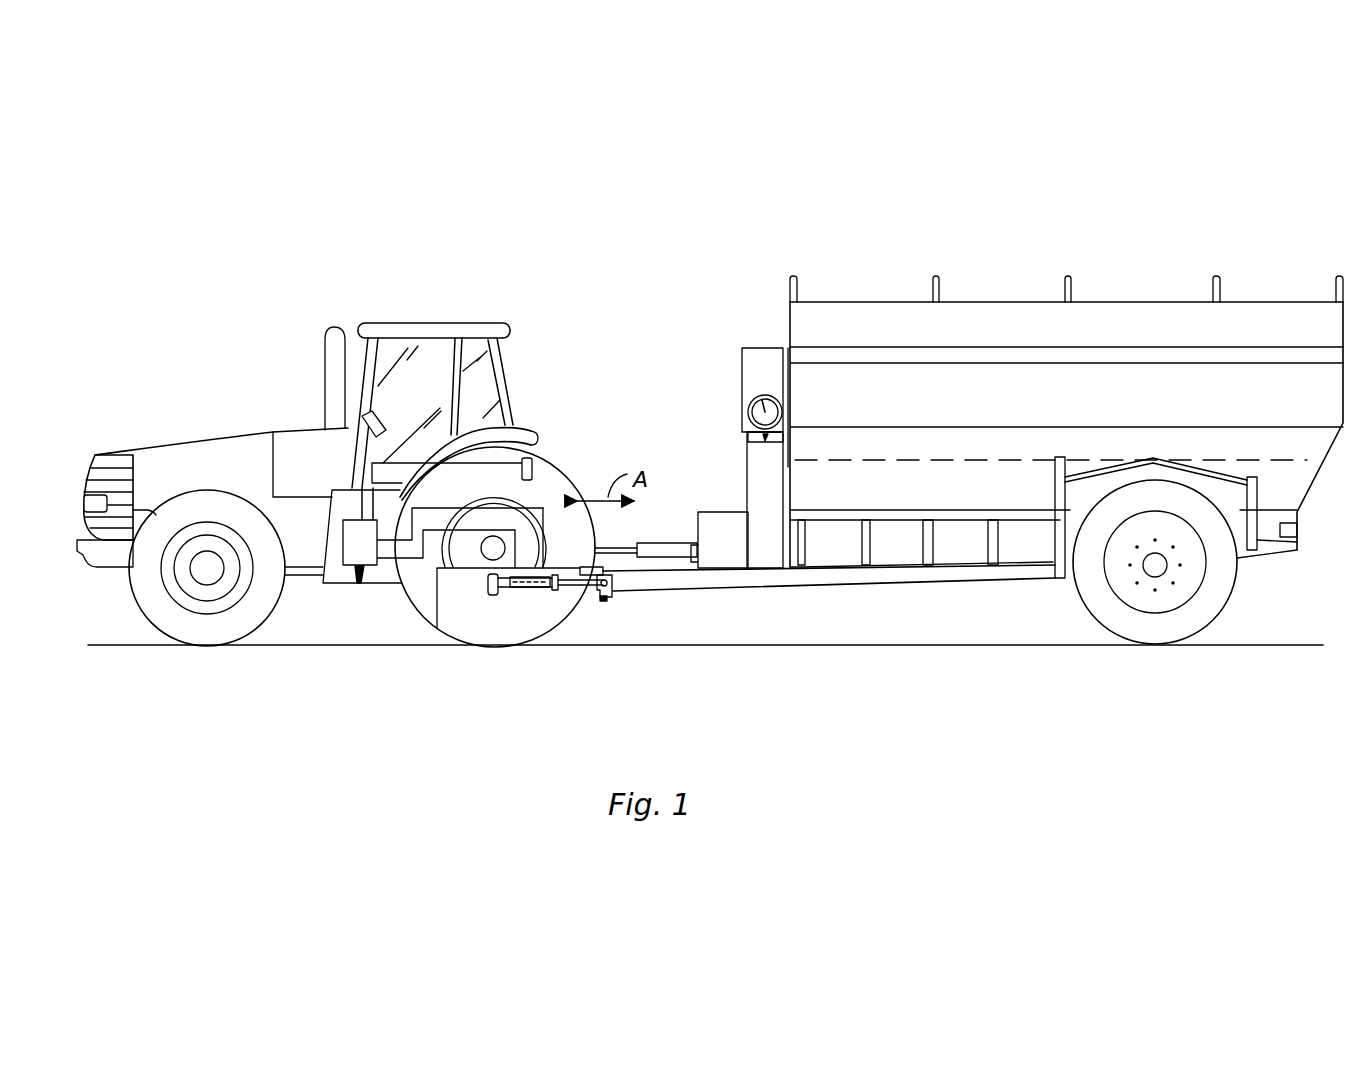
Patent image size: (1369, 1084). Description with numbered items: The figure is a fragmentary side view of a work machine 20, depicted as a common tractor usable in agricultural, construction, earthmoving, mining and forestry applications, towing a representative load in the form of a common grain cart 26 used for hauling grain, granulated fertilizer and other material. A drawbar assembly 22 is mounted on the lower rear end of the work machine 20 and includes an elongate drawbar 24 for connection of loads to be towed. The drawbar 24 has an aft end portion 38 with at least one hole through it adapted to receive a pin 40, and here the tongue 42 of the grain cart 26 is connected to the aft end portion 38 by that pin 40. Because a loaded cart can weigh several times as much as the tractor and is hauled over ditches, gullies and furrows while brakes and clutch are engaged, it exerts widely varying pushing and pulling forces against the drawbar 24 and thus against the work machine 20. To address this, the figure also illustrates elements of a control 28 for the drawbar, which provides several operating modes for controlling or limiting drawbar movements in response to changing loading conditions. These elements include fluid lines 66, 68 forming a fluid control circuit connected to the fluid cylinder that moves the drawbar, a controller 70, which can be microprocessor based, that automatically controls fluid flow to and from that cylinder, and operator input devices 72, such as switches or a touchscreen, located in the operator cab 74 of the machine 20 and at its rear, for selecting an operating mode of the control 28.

The work machine 20 is at (431, 288).
The drawbar assembly 22 is at (522, 600).
The drawbar 24 is at (577, 603).
The grain cart 26 is at (997, 298).
The control 28 is at (360, 583).
The aft end portion 38 is at (587, 595).
The pin 40 is at (603, 596).
The tongue 42 is at (643, 593).
The fluid line 66 is at (396, 558).
The fluid line 68 is at (545, 473).
The controller 70 is at (343, 562).
The input devices 72 is at (367, 410).
The operator cab 74 is at (505, 355).